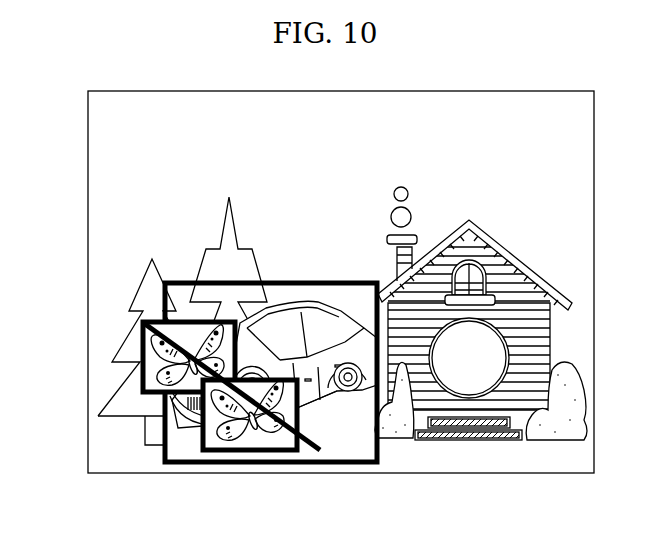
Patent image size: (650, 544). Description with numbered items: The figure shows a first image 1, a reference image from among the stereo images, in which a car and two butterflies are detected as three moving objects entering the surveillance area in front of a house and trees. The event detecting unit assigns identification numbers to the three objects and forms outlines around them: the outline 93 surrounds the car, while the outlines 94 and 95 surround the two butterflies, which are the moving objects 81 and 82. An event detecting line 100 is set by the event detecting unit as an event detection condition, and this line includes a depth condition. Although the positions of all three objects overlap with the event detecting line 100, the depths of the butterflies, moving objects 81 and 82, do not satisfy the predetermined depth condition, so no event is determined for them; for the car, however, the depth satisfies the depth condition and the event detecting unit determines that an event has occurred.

The first image 1 is at (594, 213).
The moving object 81 is at (160, 393).
The moving object 82 is at (224, 440).
The outline 93 is at (345, 281).
The outline 94 is at (143, 352).
The outline 95 is at (267, 450).
The event detecting line 100 is at (320, 452).